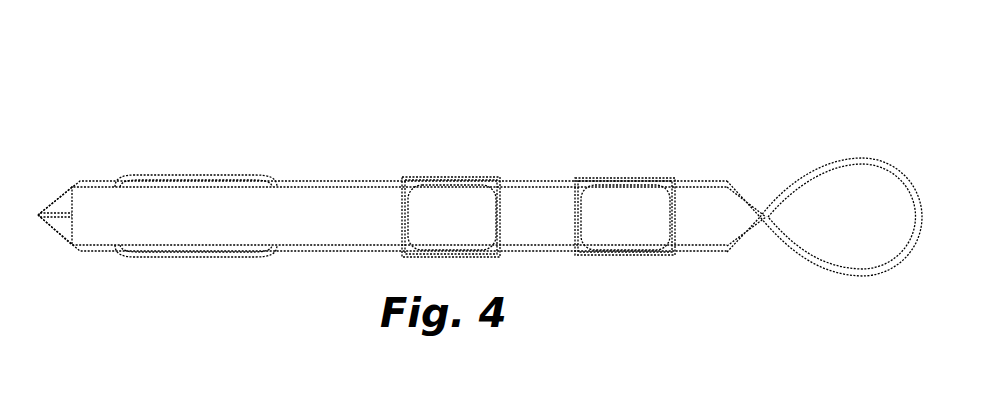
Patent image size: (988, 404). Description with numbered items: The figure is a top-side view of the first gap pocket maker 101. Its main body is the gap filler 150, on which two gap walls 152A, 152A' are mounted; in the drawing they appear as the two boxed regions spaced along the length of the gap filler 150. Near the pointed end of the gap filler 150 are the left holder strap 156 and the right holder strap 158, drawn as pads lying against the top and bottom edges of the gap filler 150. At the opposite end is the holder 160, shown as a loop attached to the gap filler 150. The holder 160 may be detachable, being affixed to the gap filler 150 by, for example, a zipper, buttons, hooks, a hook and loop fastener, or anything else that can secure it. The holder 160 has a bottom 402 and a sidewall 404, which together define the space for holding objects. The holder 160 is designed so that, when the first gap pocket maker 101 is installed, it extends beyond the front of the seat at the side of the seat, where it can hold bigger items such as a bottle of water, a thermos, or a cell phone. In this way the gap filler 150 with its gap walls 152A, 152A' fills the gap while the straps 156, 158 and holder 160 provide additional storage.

The first gap pocket maker 101 is at (214, 92).
The gap filler 150 is at (333, 205).
The gap wall 152A is at (625, 152).
The gap wall 152A' is at (459, 153).
The left holder strap 156 is at (182, 176).
The right holder strap 158 is at (180, 256).
The holder 160 is at (852, 86).
The bottom 402 is at (838, 222).
The sidewall 404 is at (863, 263).